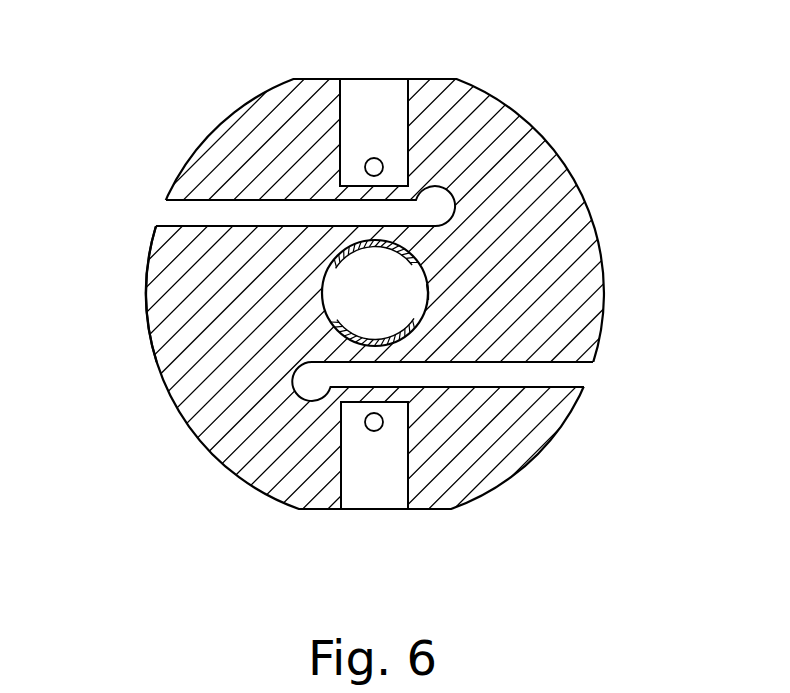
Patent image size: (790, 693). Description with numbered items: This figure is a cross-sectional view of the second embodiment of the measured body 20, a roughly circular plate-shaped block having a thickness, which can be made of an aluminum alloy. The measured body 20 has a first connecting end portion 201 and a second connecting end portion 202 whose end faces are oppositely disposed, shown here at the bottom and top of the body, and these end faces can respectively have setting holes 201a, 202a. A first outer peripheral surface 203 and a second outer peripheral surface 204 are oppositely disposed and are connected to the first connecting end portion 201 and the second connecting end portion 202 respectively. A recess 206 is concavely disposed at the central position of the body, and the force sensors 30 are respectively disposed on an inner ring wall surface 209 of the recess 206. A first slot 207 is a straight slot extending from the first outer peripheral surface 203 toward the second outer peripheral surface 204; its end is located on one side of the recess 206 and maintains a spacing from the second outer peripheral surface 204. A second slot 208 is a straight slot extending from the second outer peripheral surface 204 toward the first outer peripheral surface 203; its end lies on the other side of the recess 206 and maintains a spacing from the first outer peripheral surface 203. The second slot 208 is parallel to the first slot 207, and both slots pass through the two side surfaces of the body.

The measured body 20 is at (200, 102).
The force sensors 30 is at (343, 314).
The first connecting end portion 201 is at (427, 509).
The setting hole 201a is at (367, 493).
The second connecting end portion 202 is at (422, 78).
The setting hole 202a is at (368, 93).
The first outer peripheral surface 203 is at (150, 333).
The second outer peripheral surface 204 is at (563, 162).
The recess 206 is at (398, 307).
The first slot 207 is at (175, 215).
The second slot 208 is at (567, 378).
The inner ring wall surface 209 is at (430, 291).